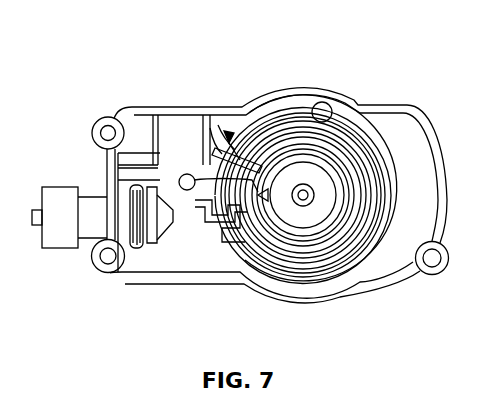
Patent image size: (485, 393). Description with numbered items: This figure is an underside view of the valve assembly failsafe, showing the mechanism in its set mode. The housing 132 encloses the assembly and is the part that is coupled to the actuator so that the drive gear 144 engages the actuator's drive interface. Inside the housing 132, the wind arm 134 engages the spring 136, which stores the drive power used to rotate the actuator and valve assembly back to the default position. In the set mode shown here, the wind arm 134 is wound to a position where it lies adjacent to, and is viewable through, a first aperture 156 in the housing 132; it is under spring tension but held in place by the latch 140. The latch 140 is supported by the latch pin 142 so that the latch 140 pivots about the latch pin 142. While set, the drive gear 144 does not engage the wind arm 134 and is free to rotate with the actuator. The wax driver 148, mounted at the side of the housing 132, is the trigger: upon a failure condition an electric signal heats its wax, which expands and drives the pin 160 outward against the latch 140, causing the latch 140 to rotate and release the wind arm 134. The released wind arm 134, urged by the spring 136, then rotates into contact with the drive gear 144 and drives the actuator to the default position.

The housing 132 is at (385, 128).
The wind arm 134 is at (236, 133).
The spring 136 is at (340, 247).
The latch 140 is at (187, 173).
The latch pin 142 is at (188, 174).
The drive gear 144 is at (192, 176).
The wax driver 148 is at (60, 240).
The first aperture 156 is at (228, 132).
The pin 160 is at (158, 224).